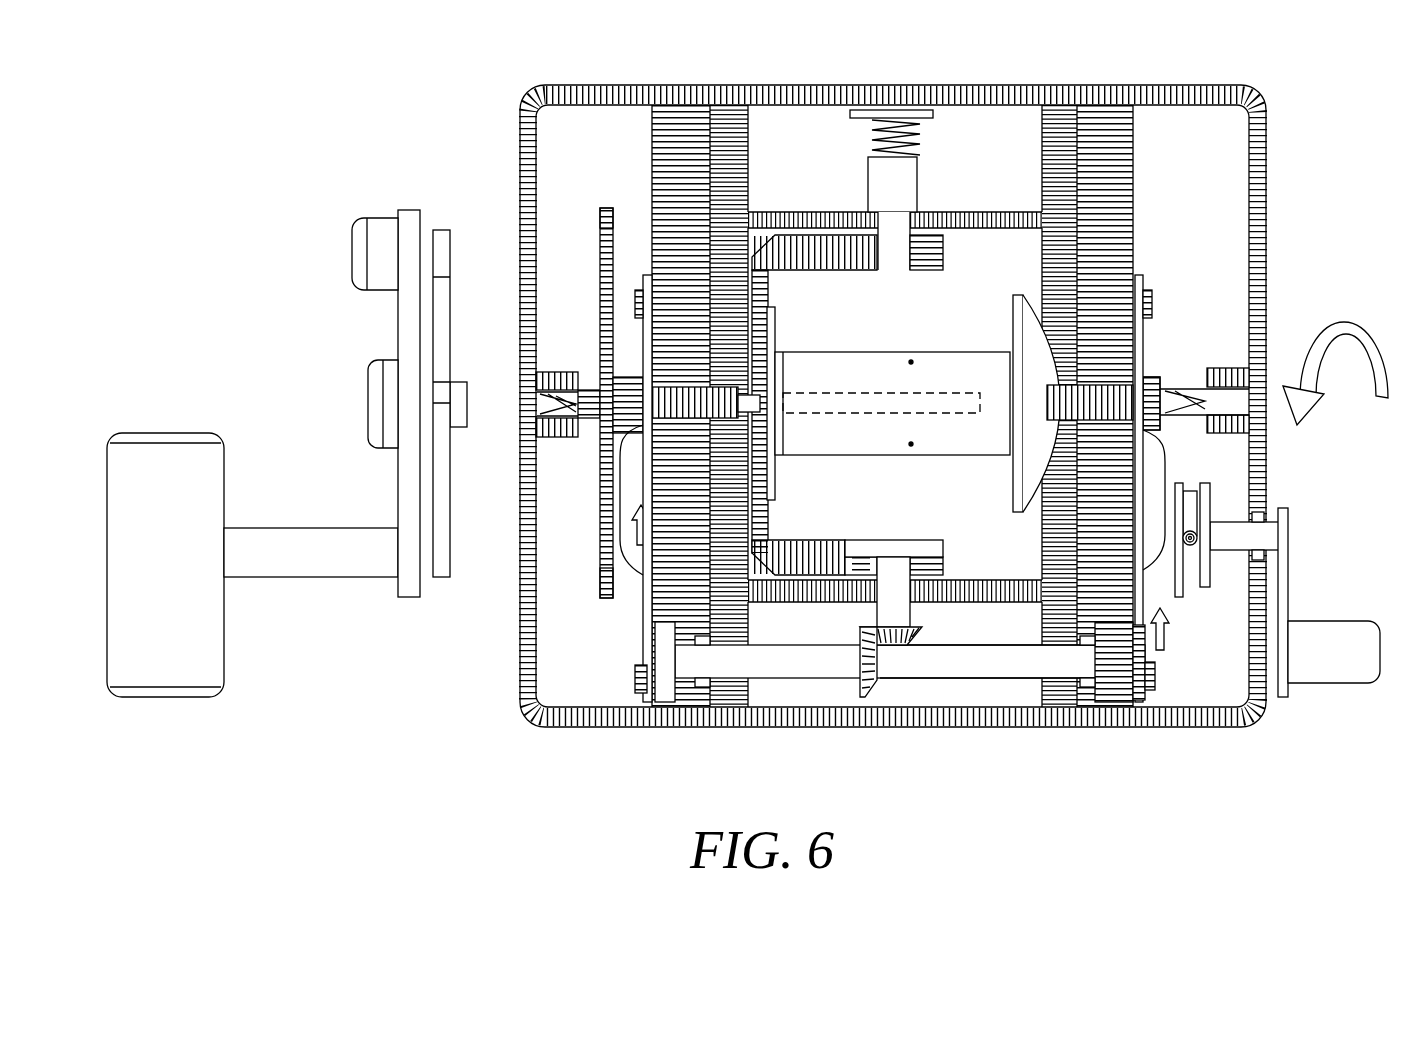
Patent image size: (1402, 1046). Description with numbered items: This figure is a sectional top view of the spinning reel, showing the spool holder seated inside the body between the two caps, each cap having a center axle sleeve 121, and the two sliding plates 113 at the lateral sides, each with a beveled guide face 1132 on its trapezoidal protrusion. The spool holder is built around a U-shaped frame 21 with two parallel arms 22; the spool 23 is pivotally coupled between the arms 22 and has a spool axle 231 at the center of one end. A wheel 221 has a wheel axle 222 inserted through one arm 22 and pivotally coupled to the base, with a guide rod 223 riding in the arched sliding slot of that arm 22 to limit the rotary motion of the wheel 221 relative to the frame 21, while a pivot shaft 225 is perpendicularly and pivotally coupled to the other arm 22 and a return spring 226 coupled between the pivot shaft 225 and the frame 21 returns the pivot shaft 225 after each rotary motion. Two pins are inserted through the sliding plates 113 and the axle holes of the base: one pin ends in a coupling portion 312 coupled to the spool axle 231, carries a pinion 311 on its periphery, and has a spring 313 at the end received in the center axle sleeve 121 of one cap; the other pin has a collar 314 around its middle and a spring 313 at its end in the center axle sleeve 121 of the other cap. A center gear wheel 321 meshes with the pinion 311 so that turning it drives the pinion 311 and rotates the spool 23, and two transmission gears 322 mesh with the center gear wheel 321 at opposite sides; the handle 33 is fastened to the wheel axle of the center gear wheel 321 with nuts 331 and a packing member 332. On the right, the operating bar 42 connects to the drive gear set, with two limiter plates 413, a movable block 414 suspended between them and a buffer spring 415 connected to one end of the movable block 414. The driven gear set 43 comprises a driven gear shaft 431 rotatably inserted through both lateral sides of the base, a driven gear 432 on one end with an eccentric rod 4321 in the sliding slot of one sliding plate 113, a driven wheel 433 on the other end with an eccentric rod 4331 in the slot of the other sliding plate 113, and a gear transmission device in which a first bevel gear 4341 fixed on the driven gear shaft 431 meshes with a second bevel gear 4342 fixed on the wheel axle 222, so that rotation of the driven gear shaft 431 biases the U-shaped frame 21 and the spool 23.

The U-shaped frame 21 is at (765, 297).
The arm 22 is at (838, 248).
The wheel 221 is at (882, 540).
The wheel axle 222 is at (878, 612).
The guide rod 223 is at (935, 565).
The pivot shaft 225 is at (905, 130).
The return spring 226 is at (860, 122).
The spool 23 is at (972, 445).
The spool axle 231 is at (932, 413).
The pinion 311 is at (626, 380).
The coupling portion 312 is at (672, 420).
The spring 313 is at (530, 370).
The collar 314 is at (1163, 384).
The center gear wheel 321 is at (606, 316).
The transmission gear 322 is at (605, 230).
The handle 33 is at (205, 638).
The nut 331 is at (392, 372).
The packing member 332 is at (440, 235).
The sliding plate 113 is at (647, 638).
The beveled guide face 1132 is at (600, 440).
The center axle sleeve 121 is at (535, 440).
The limiter plate 413 is at (1206, 580).
The movable block 414 is at (1191, 500).
The buffer spring 415 is at (1197, 538).
The operating bar 42 is at (1350, 688).
The driven gear set 43 is at (825, 670).
The driven gear shaft 431 is at (982, 680).
The driven gear 432 is at (663, 690).
The driven wheel 433 is at (1118, 690).
The eccentric rod 4321 is at (1157, 683).
The eccentric rod 4331 is at (633, 676).
The first bevel gear 4341 is at (870, 700).
The second bevel gear 4342 is at (920, 635).